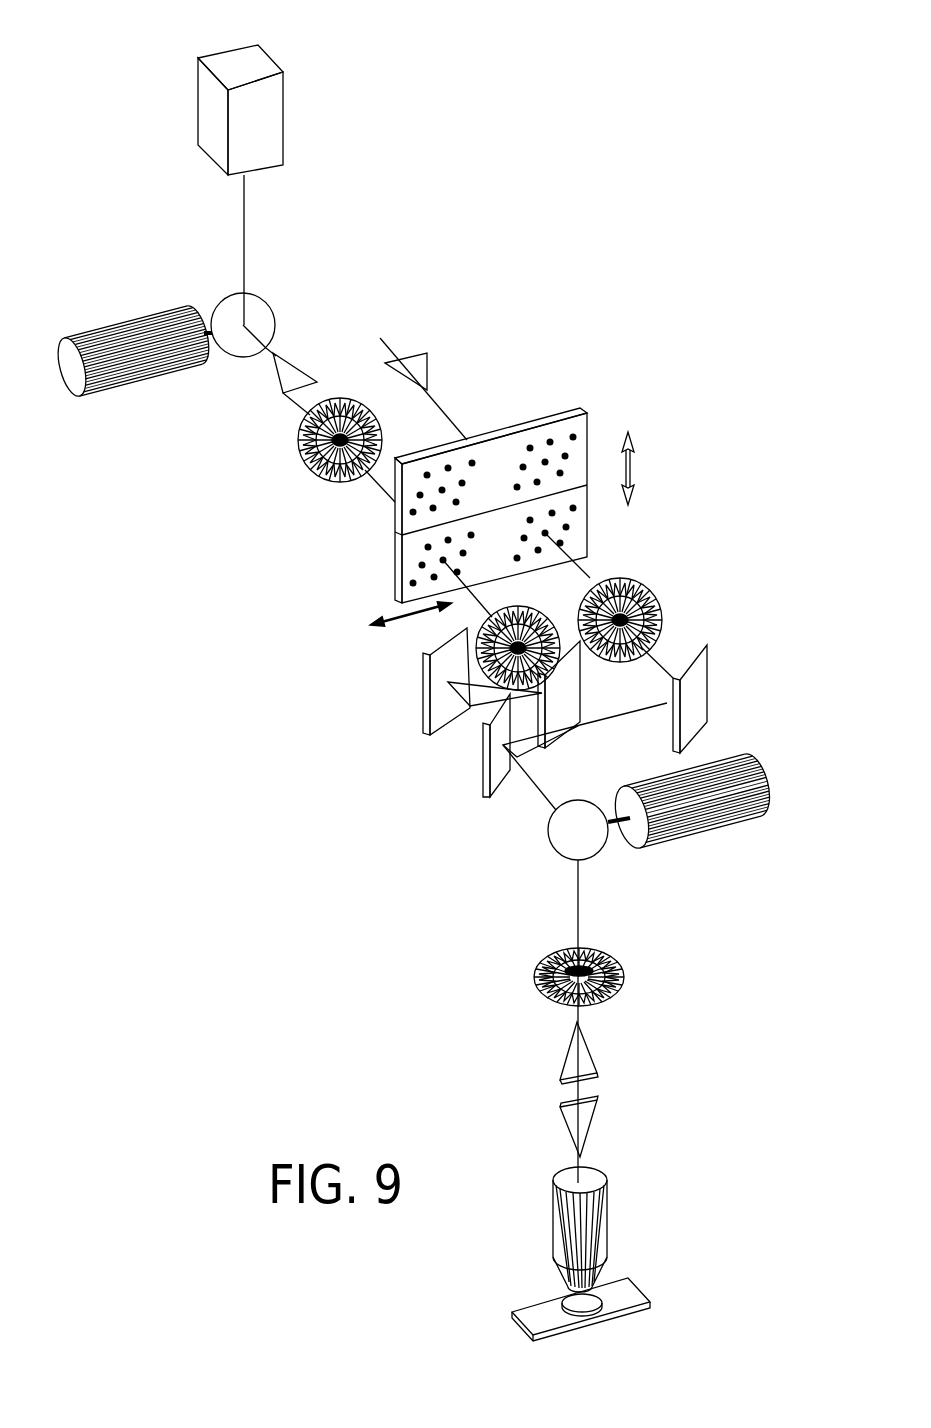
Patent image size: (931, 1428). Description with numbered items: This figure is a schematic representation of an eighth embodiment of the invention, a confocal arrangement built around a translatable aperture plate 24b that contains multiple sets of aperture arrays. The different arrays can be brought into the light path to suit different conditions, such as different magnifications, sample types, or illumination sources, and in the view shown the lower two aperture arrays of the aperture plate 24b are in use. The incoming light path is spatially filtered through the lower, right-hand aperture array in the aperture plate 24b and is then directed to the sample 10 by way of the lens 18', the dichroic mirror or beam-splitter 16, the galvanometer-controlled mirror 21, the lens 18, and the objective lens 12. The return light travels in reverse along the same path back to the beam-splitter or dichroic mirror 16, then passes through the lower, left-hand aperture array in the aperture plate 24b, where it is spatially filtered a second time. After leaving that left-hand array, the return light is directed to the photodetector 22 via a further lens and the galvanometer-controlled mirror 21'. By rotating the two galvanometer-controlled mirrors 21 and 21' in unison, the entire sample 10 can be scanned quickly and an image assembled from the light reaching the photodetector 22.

The sample 10 is at (641, 1272).
The objective lens 12 is at (641, 1196).
The dichroic mirror or beam-splitter 16 is at (542, 734).
The lens 18 is at (638, 956).
The lens 18' is at (606, 588).
The galvanometer-controlled mirror 21 is at (519, 850).
The galvanometer-controlled mirror 21' is at (303, 297).
The photodetector 22 is at (302, 91).
The aperture plate 24b is at (566, 459).